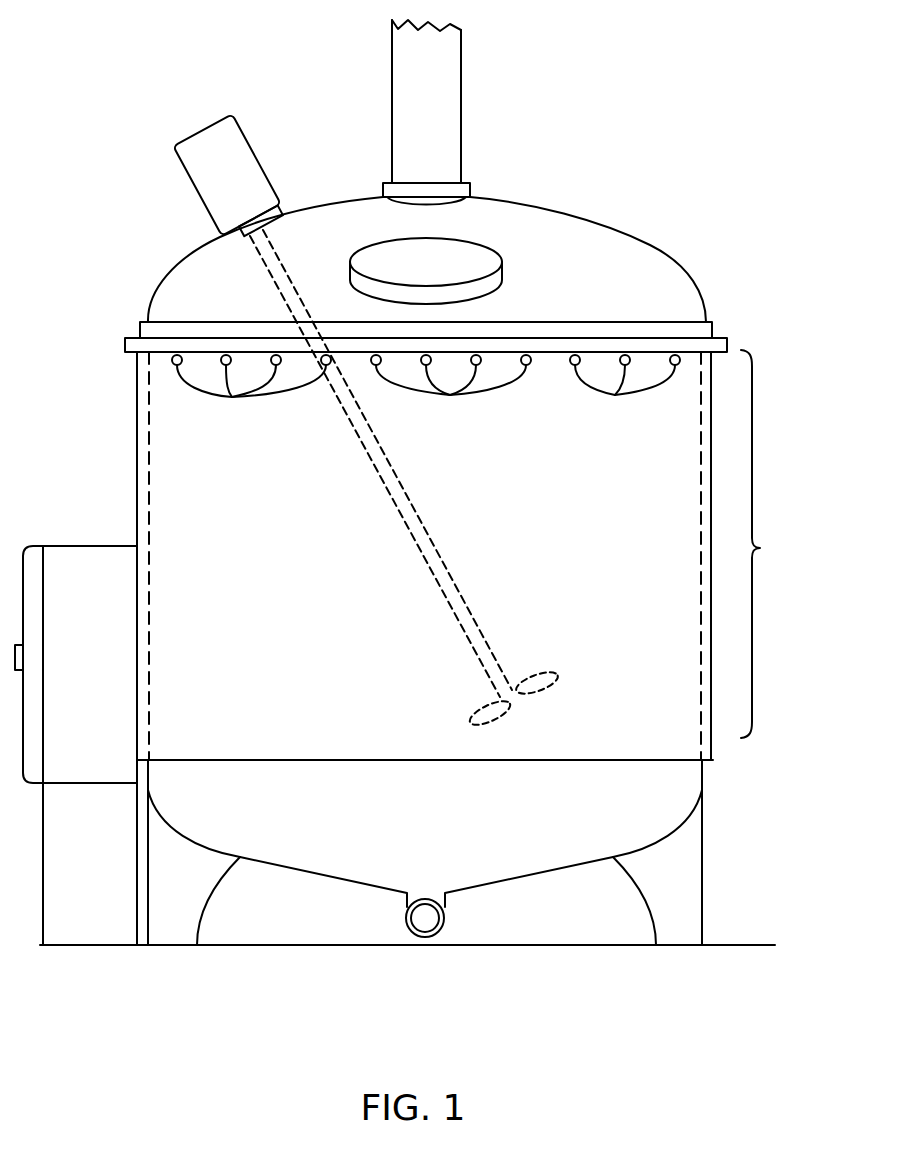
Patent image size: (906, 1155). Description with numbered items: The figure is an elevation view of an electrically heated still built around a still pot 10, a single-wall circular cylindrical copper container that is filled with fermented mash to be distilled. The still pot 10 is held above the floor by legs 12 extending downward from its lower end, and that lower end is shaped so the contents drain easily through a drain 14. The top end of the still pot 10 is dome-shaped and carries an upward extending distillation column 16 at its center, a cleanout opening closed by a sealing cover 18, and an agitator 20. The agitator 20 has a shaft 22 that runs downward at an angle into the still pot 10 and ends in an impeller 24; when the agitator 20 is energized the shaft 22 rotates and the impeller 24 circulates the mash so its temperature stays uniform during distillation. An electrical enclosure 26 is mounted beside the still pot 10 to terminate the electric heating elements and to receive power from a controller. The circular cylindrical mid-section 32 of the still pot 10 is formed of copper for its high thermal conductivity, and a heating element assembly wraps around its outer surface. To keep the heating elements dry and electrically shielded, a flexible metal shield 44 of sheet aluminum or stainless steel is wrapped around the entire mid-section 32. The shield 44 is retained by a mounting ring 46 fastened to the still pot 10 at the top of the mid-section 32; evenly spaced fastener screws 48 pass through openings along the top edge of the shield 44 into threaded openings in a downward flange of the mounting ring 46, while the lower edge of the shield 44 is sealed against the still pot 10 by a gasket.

The still pot 10 is at (559, 283).
The legs 12 is at (207, 897).
The drain 14 is at (445, 928).
The distillation column 16 is at (461, 70).
The sealing cover 18 is at (472, 242).
The agitator 20 is at (172, 197).
The shaft 22 is at (405, 490).
The impeller 24 is at (531, 678).
The electrical enclosure 26 is at (80, 677).
The mid-section 32 is at (768, 544).
The shield 44 is at (138, 490).
The mounting ring 46 is at (713, 333).
The fastener screws 48 is at (426, 390).